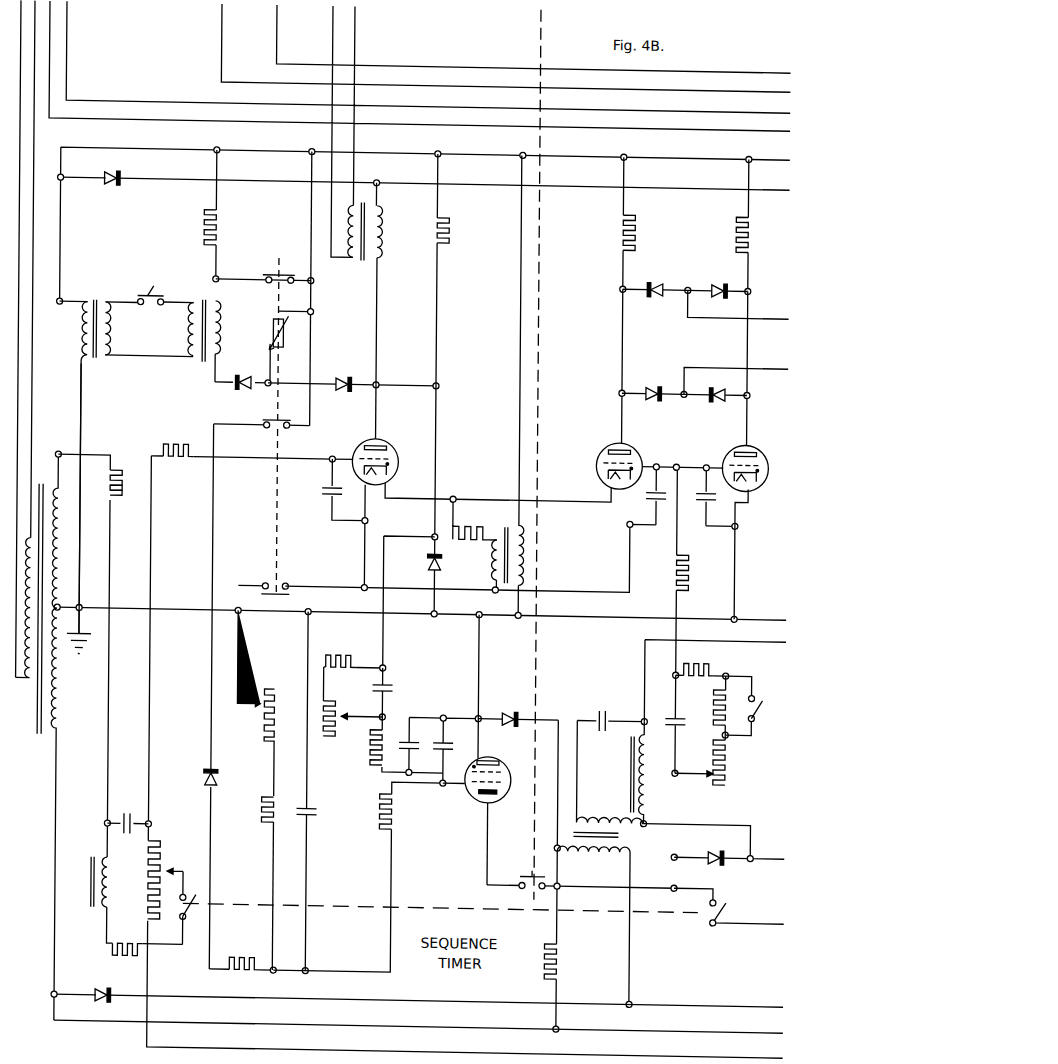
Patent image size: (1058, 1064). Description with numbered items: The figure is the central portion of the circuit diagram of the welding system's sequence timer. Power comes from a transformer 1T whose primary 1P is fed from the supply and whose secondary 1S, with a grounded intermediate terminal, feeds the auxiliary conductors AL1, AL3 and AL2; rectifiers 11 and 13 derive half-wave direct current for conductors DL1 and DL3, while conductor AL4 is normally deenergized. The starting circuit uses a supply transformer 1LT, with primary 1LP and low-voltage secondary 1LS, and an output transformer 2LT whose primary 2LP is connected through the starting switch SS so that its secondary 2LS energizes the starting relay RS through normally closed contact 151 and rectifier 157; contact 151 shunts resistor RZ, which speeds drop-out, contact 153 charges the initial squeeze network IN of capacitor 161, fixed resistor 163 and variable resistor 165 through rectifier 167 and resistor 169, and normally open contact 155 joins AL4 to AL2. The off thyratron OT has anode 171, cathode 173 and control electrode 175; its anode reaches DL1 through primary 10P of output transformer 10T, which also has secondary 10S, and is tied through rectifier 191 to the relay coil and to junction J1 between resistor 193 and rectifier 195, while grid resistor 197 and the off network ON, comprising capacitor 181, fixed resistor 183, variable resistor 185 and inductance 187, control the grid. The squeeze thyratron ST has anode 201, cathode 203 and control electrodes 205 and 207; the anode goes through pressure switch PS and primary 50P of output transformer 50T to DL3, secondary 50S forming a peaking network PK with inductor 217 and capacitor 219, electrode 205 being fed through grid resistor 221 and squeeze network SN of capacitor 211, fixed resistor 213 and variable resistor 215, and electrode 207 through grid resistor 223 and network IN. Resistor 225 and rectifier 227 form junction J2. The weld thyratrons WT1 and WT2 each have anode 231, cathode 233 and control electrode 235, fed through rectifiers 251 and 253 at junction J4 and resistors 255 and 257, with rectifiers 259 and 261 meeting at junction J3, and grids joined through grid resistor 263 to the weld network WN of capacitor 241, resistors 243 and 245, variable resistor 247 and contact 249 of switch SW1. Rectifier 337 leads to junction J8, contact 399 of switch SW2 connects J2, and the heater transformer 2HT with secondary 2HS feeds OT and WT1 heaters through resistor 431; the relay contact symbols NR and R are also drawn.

The rectifier 11 is at (121, 176).
The rectifier 13 is at (108, 986).
The normally closed contact 151 is at (263, 267).
The normally closed contact 153 is at (266, 416).
The normally open contact 155 is at (268, 577).
The rectifier 157 is at (248, 372).
The capacitor 161 is at (323, 805).
The fixed resistor 163 is at (267, 812).
The variable resistor 165 is at (275, 684).
The rectifier 167 is at (213, 772).
The resistor 169 is at (236, 958).
The anode 171 is at (362, 443).
The cathode 173 is at (396, 470).
The control electrode 175 is at (392, 452).
The capacitor 181 is at (148, 815).
The fixed resistor 183 is at (127, 936).
The variable resistor 185 is at (168, 843).
The inductance 187 is at (96, 858).
The rectifier 191 is at (347, 372).
The resistor 193 is at (451, 224).
The rectifier 195 is at (432, 556).
The grid resistor 197 is at (198, 444).
The anode 201 is at (500, 796).
The cathode 203 is at (498, 750).
The first control electrode 205 is at (510, 762).
The second control electrode 207 is at (476, 780).
The capacitor 211 is at (392, 680).
The fixed resistor 213 is at (344, 652).
The variable resistor 215 is at (332, 726).
The inductor 217 is at (636, 757).
The capacitor 219 is at (614, 708).
The grid resistor 221 is at (374, 758).
The grid resistor 223 is at (400, 812).
The resistor 225 is at (568, 950).
The rectifier 227 is at (526, 708).
The anode 231 is at (731, 444).
The cathode 233 is at (604, 468).
The control electrode 235 is at (604, 444).
The capacitor 241 is at (688, 715).
The fixed resistor 243 is at (718, 660).
The fixed resistor 245 is at (717, 700).
The variable resistor 247 is at (733, 771).
The contact 249 is at (760, 710).
The rectifier 251 is at (666, 274).
The rectifier 253 is at (703, 274).
The resistor 255 is at (636, 216).
The resistor 257 is at (736, 230).
The rectifier 259 is at (648, 388).
The rectifier 261 is at (713, 388).
The grid resistor 263 is at (693, 562).
The rectifier 337 is at (731, 843).
The contact 399 is at (705, 893).
The resistor 431 is at (468, 520).
The auxiliary conductor AL1 is at (462, 146).
The auxiliary conductor AL2 is at (576, 610).
The auxiliary conductor AL3 is at (452, 1024).
The conductor AL4 is at (608, 582).
The conductor DL1 is at (559, 182).
The conductor DL3 is at (688, 993).
The resistor RZ is at (205, 230).
The starting relay RS is at (275, 320).
The starting switch SS is at (166, 288).
The supply transformer 1LT is at (97, 300).
The primary 1LP is at (87, 362).
The secondary 1LS is at (114, 325).
The output transformer 2LT is at (203, 360).
The primary 2LP is at (192, 338).
The secondary 2LS is at (232, 324).
The secondary 10S is at (352, 243).
The primary 10P is at (384, 230).
The output transformer 10T is at (372, 262).
The junction J1 is at (443, 378).
The junction J2 is at (578, 878).
The junction J3 is at (684, 378).
The junction J4 is at (686, 288).
The junction J8 is at (760, 844).
The off thyratron OT is at (386, 434).
The weld thyratron WT1 is at (612, 444).
The weld thyratron WT2 is at (752, 438).
The squeeze thyratron ST is at (482, 800).
The secondary 2HS is at (496, 560).
The heater transformer 2HT is at (535, 536).
The primary 1P is at (27, 678).
The secondary 1S is at (58, 700).
The transformer 1T is at (40, 722).
The off network ON is at (122, 882).
The relay contact NR is at (189, 893).
The relay contact R is at (191, 907).
The initial squeeze network IN is at (287, 775).
The squeeze network SN is at (354, 680).
The pressure switch PS is at (536, 866).
The repeat non-repeat switch SW2 is at (437, 900).
The peaking network PK is at (615, 774).
The secondary 50S is at (611, 771).
The primary 50P is at (620, 847).
The output transformer 50T is at (619, 842).
The switch SW1 is at (778, 703).
The weld network WN is at (694, 766).